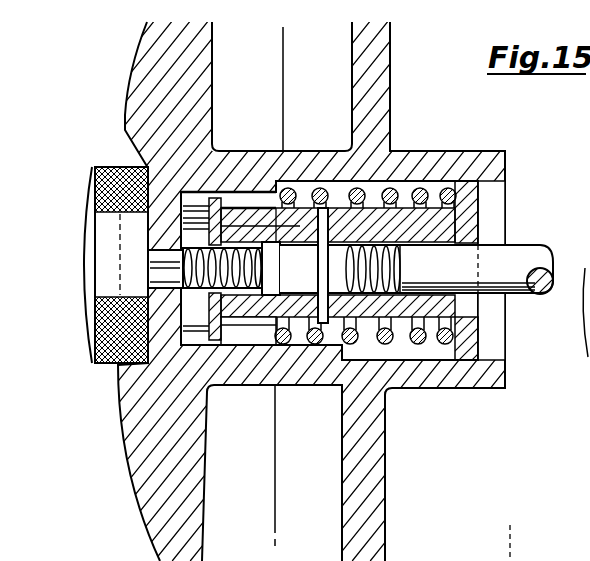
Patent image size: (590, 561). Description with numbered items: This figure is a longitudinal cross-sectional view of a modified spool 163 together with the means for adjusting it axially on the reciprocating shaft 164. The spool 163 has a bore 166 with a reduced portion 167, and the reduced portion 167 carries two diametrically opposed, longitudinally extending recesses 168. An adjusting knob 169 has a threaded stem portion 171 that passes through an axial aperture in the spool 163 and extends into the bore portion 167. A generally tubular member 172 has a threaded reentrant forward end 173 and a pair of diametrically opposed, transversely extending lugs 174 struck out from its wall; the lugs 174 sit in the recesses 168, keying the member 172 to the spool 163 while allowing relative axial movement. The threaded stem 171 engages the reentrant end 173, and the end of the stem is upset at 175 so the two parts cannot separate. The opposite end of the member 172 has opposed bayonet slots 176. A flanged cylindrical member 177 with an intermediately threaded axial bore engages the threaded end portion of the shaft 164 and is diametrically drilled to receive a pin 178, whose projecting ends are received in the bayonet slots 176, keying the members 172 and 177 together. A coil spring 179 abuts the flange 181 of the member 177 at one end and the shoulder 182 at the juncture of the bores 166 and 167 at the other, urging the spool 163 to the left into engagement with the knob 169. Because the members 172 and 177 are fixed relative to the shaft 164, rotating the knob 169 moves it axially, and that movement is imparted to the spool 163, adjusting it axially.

The spool 163 is at (213, 77).
The reciprocating shaft 164 is at (515, 245).
The bore 166 is at (428, 180).
The reduced portion 167 is at (205, 292).
The recesses 168 is at (268, 347).
The adjusting knob 169 is at (98, 167).
The threaded stem portion 171 is at (206, 194).
The member 172 is at (335, 325).
The threaded reentrant forward end 173 is at (276, 208).
The lugs 174 is at (255, 320).
The upset end 175 is at (262, 226).
The bayonet slots 176 is at (352, 185).
The flanged cylindrical member 177 is at (423, 303).
The pin 178 is at (365, 181).
The coil spring 179 is at (455, 175).
The flange 181 is at (470, 193).
The shoulder 182 is at (325, 325).